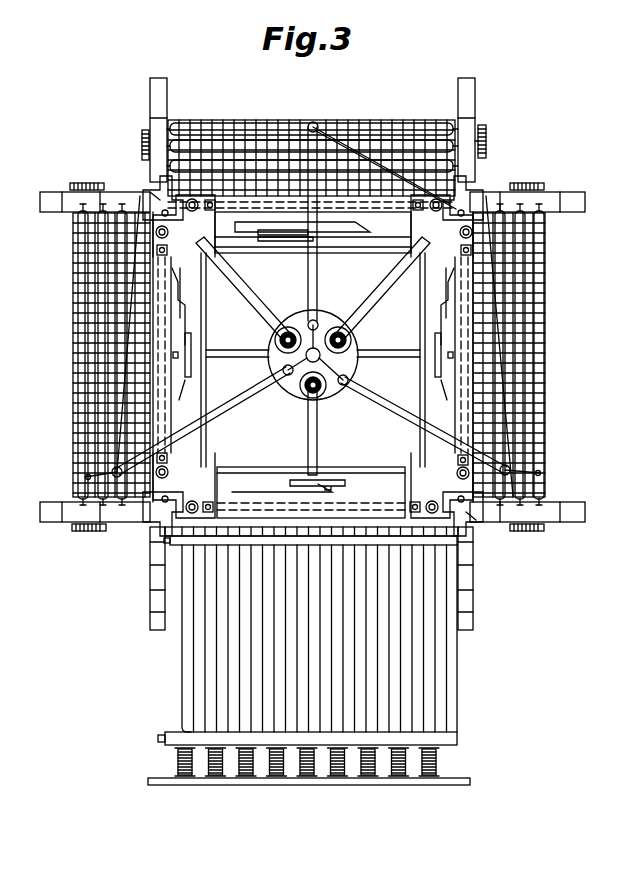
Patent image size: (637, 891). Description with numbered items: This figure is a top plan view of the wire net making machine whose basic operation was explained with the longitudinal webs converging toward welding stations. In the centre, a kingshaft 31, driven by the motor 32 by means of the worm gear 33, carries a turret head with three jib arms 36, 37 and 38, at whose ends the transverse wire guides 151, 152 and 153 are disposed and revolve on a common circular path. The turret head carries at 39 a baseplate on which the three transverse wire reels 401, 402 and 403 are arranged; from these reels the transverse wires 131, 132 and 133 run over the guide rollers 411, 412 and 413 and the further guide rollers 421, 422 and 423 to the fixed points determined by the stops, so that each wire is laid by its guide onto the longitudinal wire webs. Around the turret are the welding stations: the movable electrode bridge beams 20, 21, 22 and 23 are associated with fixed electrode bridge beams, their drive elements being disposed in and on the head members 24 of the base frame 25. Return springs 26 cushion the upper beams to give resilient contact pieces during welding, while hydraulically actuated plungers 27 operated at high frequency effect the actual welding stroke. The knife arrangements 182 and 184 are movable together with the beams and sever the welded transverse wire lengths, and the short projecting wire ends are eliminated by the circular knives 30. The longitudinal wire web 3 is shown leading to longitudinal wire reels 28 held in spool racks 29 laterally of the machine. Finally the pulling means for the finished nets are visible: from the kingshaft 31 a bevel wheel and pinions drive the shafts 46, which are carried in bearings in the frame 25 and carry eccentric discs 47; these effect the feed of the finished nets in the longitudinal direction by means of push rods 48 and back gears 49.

The longitudinal wire web 3 is at (310, 691).
The kingshaft 31 is at (181, 688).
The motor 32 is at (193, 706).
The worm gear 33 is at (204, 722).
The transverse wire 131 is at (371, 160).
The transverse wire 132 is at (121, 428).
The transverse wire 133 is at (520, 494).
The transverse wire guide 151 is at (339, 141).
The transverse wire guide 152 is at (100, 476).
The transverse wire guide 153 is at (530, 470).
The knife arrangement 182 is at (160, 207).
The knife arrangement 184 is at (463, 506).
The movable electrode bridge beam 20 is at (284, 196).
The movable electrode bridge beam 21 is at (76, 412).
The movable electrode bridge beam 22 is at (313, 628).
The movable electrode bridge beam 23 is at (472, 326).
The head member 24 is at (285, 246).
The base frame 25 is at (240, 272).
The return spring 26 is at (215, 210).
The hydraulically actuated plunger 27 is at (192, 212).
The longitudinal wire reel 28 is at (371, 778).
The spool rack 29 is at (386, 786).
The circular knife 30 is at (74, 186).
The jib arm 36 is at (318, 268).
The jib arm 37 is at (226, 409).
The jib arm 38 is at (396, 409).
The baseplate 39 is at (298, 318).
The transverse wire reel 401 is at (351, 340).
The transverse wire reel 402 is at (276, 334).
The transverse wire reel 403 is at (322, 393).
The guide roller 411 is at (316, 323).
The guide roller 412 is at (283, 371).
The guide roller 413 is at (348, 380).
The guide roller 421 is at (313, 122).
The guide roller 422 is at (115, 476).
The guide roller 423 is at (509, 467).
The shaft 46 is at (220, 352).
The eccentric disc 47 is at (183, 382).
The push rod 48 is at (186, 300).
The back gear 49 is at (527, 183).